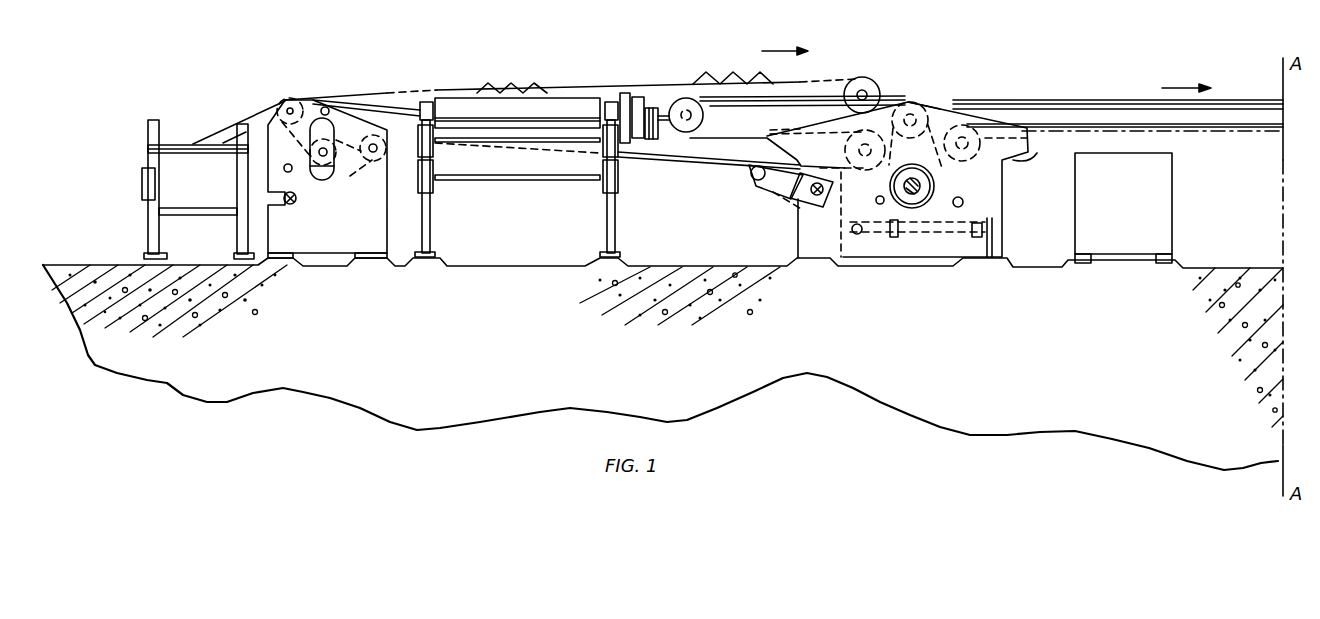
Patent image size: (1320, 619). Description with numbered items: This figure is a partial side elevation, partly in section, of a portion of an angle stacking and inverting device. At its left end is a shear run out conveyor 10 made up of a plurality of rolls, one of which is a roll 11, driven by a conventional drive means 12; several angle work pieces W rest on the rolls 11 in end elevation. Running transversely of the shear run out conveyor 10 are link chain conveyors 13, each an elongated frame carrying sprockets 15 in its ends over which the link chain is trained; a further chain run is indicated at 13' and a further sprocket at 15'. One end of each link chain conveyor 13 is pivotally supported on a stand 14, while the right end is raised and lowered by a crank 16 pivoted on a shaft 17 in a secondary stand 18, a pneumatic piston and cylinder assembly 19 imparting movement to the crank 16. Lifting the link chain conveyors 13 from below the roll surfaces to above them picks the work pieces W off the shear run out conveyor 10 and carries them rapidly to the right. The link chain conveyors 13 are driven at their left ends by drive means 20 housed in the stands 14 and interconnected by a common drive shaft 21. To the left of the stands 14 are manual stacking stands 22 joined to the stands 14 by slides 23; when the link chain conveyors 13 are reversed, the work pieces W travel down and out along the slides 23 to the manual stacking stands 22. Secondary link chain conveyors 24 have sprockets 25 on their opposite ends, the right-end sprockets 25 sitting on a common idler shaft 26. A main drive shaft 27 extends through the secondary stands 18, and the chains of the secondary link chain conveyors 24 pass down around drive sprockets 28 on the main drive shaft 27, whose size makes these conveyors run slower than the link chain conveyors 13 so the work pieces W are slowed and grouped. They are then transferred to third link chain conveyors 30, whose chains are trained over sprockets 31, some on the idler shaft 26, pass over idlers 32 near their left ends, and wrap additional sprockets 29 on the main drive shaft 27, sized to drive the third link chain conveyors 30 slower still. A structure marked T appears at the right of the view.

The shear run out conveyor 10 is at (520, 167).
The roll 11 is at (573, 98).
The drive means 12 is at (638, 143).
The link chain conveyor 13 is at (381, 111).
The drive bar 13' is at (709, 163).
The stand 14 is at (327, 179).
The sprocket 15 is at (585, 84).
The roller 15' is at (865, 165).
The crank 16 is at (785, 183).
The shaft 17 is at (816, 196).
The secondary stand 18 is at (993, 192).
The pneumatic piston and cylinder assembly 19 is at (898, 212).
The drive means 20 is at (328, 160).
The common drive shaft 21 is at (297, 198).
The manual stacking stand 22 is at (198, 189).
The slide 23 is at (252, 124).
The secondary link chain conveyor 24 is at (832, 44).
The sprocket 25 is at (680, 98).
The common idler shaft 26 is at (909, 127).
The main drive shaft 27 is at (915, 190).
The drive sprocket 28 is at (921, 186).
The additional sprocket 29 is at (913, 212).
The third link chain conveyor 30 is at (1077, 118).
The sprocket 31 is at (930, 100).
The idler 32 is at (1000, 147).
The table T is at (1123, 208).
The work piece W is at (497, 83).